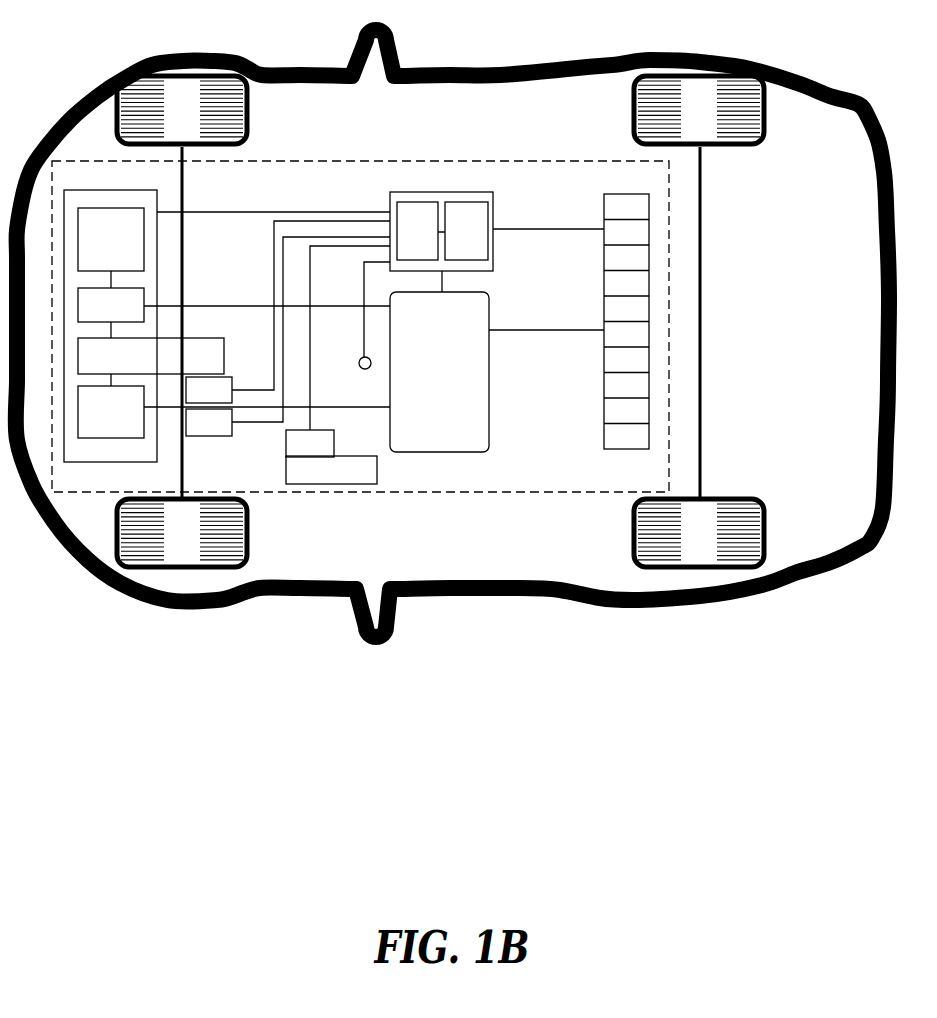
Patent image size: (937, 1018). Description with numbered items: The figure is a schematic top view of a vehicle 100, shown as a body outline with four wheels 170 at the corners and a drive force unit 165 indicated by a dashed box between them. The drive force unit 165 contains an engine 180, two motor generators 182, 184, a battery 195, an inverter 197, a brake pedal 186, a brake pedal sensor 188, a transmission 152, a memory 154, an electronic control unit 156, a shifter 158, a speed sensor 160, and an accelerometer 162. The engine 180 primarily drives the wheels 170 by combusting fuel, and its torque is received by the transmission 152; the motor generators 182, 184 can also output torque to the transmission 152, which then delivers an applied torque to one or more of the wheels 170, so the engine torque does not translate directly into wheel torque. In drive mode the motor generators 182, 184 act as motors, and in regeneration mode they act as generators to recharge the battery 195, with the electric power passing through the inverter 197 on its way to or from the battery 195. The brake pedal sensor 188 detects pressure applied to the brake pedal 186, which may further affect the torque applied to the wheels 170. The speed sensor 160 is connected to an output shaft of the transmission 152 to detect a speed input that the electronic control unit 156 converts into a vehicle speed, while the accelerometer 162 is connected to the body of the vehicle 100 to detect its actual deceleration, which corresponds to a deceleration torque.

The vehicle 100 is at (509, 67).
The drive force unit 165 is at (436, 162).
The wheels 170 is at (166, 121).
The transmission 152 is at (136, 367).
The memory 154 is at (452, 242).
The electronic control unit (ECU) 156 is at (403, 242).
The shifter 158 is at (358, 365).
The speed sensor 160 is at (194, 401).
The accelerometer 162 is at (194, 434).
The engine 180 is at (95, 251).
The motor generator (MG) 182 is at (95, 316).
The motor generator (MG) 184 is at (95, 423).
The brake pedal 186 is at (316, 481).
The brake pedal sensor 188 is at (295, 455).
The battery 195 is at (604, 373).
The inverter 197 is at (424, 381).